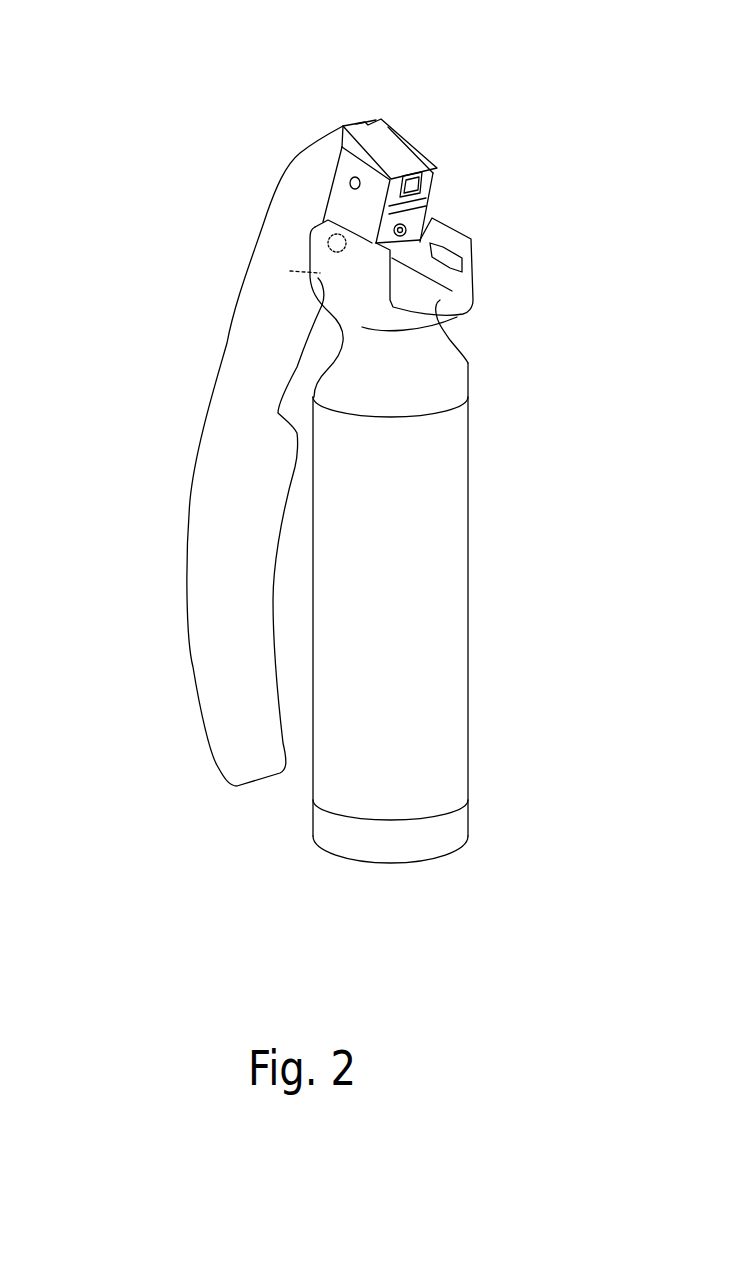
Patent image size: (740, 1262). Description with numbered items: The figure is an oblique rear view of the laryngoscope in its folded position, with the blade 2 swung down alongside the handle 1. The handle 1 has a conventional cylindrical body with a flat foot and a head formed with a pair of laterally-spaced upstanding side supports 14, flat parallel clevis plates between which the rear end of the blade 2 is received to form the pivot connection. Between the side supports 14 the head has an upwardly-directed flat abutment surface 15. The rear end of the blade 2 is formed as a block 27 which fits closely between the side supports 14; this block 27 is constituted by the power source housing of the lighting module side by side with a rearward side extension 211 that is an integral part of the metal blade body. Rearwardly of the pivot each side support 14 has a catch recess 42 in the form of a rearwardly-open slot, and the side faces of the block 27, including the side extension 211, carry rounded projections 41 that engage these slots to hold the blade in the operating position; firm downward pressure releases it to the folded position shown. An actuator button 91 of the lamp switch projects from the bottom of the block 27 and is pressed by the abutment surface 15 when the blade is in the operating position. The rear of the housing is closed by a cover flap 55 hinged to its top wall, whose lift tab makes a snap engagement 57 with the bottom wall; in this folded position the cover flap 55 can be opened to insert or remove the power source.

The handle 1 is at (482, 622).
The blade 2 is at (163, 474).
The side supports 14 is at (297, 273).
The abutment surface 15 is at (410, 292).
The block 27 is at (363, 118).
The projections 41 is at (348, 176).
The catch recess 42 is at (470, 237).
The cover flap 55 is at (390, 145).
The snap engagement 57 is at (440, 190).
The actuator button 91 is at (430, 213).
The rearward side extension 211 is at (345, 210).